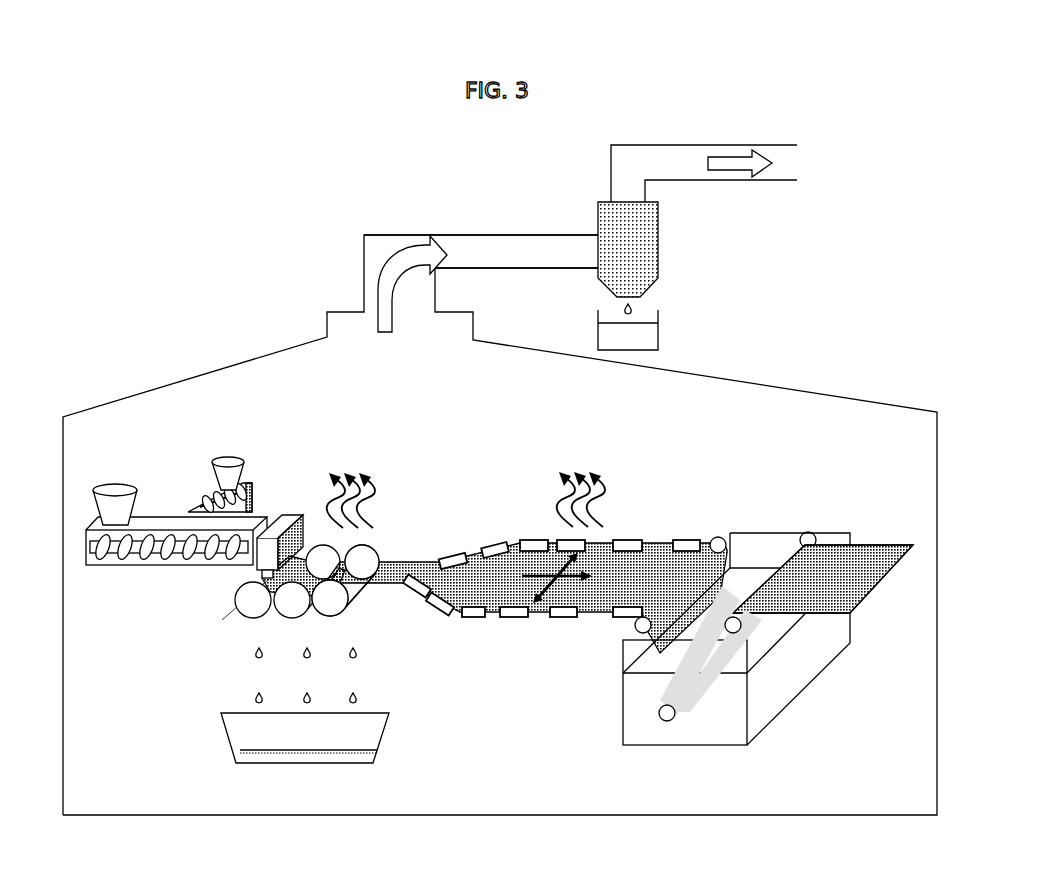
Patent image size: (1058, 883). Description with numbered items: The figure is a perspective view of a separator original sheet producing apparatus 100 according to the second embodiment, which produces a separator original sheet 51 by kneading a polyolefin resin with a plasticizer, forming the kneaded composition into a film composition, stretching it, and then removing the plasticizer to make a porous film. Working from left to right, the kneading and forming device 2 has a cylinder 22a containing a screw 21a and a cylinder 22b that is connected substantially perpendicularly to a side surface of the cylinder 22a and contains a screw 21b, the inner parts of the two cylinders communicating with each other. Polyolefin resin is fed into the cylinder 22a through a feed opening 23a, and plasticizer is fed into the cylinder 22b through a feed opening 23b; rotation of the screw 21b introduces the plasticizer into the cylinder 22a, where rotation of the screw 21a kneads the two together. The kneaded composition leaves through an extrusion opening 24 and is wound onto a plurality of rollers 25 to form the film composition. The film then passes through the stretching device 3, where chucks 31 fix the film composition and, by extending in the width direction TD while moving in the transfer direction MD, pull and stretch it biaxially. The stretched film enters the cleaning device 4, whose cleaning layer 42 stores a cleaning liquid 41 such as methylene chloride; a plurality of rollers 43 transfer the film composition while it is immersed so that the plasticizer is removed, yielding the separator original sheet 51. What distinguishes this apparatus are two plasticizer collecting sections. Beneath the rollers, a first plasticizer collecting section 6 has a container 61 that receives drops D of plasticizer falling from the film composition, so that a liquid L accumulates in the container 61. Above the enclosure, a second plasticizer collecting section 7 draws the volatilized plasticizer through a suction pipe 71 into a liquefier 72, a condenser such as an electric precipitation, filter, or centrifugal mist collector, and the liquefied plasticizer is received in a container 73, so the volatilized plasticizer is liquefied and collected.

The separator original sheet producing apparatus 100 is at (873, 262).
The second plasticizer collecting section 7 is at (383, 232).
The suction pipe 71 is at (521, 272).
The liquefier 72 is at (658, 247).
The container 73 is at (658, 331).
The kneading and forming device 2 is at (294, 446).
The screw 21a is at (190, 560).
The screw 21b is at (252, 495).
The cylinder 22a is at (95, 567).
The cylinder 22b is at (205, 502).
The feed opening 23a is at (115, 478).
The feed opening 23b is at (228, 455).
The extrusion opening 24 is at (247, 618).
The rollers 25 is at (292, 612).
The stretching device 3 is at (666, 499).
The chucks 31 is at (453, 556).
The width direction TD is at (537, 588).
The transfer direction MD is at (580, 578).
The cleaning device 4 is at (853, 499).
The cleaning liquid 41 is at (778, 695).
The cleaning layer 42 is at (718, 748).
The rollers 43 is at (667, 722).
The separator original sheet 51 is at (883, 550).
The first plasticizer collecting section 6 is at (436, 748).
The container 61 is at (388, 718).
The liquid L is at (372, 755).
The drops D is at (358, 652).